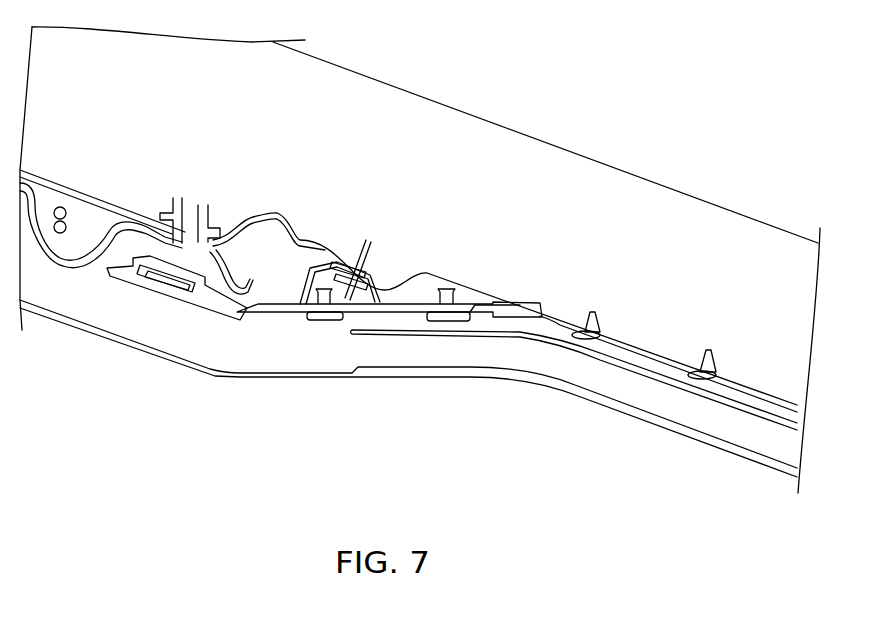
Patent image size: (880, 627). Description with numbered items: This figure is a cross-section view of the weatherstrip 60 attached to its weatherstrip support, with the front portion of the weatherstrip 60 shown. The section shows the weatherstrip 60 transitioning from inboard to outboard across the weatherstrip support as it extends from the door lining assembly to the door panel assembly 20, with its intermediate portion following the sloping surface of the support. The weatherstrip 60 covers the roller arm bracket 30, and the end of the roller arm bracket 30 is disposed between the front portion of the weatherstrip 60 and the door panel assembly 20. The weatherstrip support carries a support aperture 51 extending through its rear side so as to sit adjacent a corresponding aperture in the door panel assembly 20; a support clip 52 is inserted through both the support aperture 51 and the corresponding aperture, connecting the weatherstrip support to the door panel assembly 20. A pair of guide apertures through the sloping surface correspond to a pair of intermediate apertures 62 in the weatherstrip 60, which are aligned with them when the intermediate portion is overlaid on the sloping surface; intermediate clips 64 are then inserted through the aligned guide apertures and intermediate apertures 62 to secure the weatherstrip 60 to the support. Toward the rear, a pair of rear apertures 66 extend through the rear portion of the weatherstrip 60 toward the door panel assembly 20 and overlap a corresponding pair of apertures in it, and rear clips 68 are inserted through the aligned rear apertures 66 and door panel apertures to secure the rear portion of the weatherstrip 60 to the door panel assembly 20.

The door panel assembly 20 is at (638, 334).
The roller arm bracket 30 is at (65, 268).
The support aperture 51 is at (336, 265).
The support clip 52 is at (357, 298).
The weatherstrip 60 is at (393, 378).
The intermediate apertures 62 is at (292, 318).
The intermediate clips 64 is at (323, 323).
The rear apertures 66 is at (573, 320).
The rear clips 68 is at (595, 312).